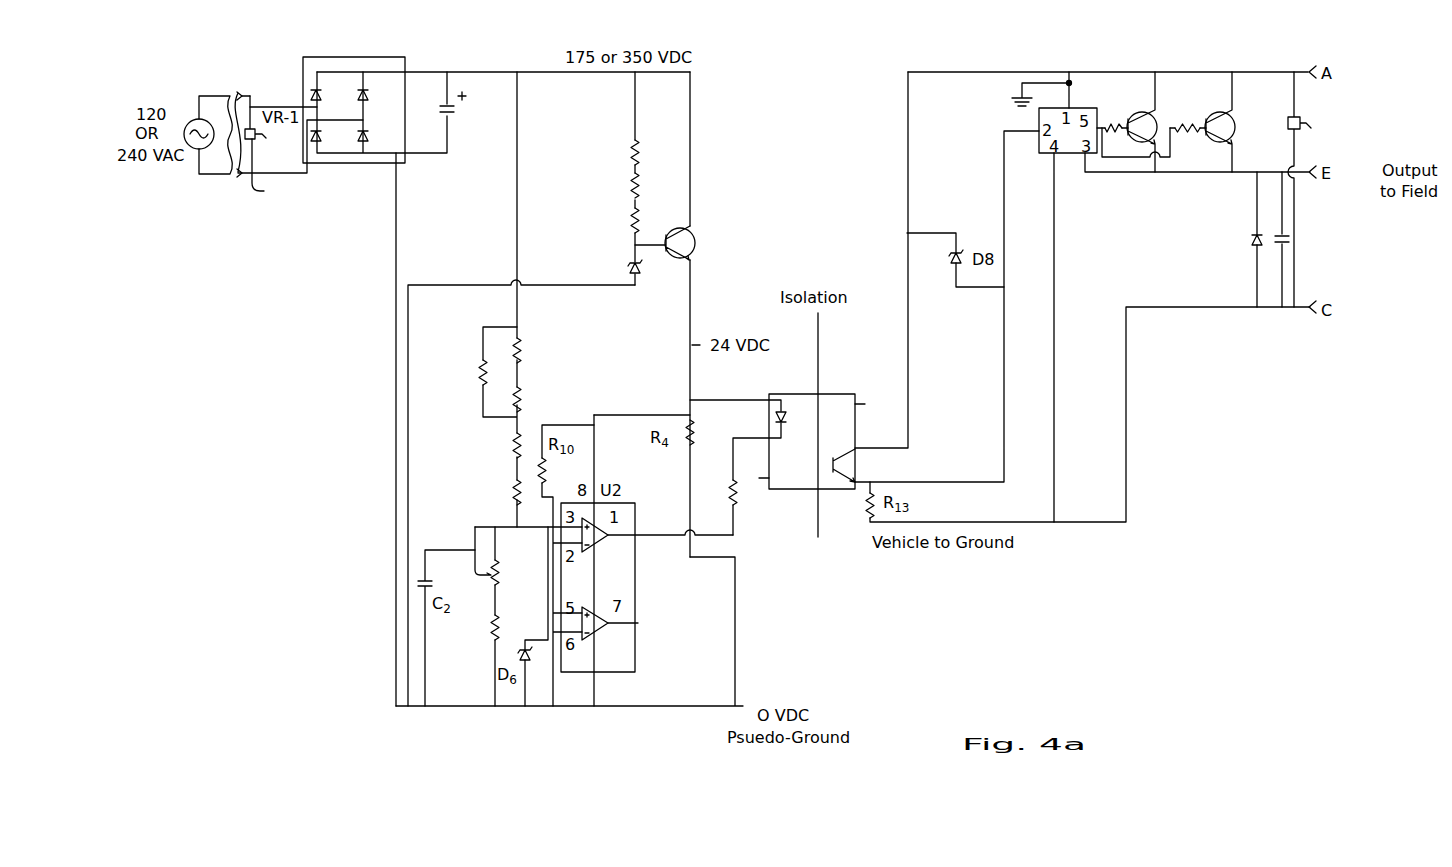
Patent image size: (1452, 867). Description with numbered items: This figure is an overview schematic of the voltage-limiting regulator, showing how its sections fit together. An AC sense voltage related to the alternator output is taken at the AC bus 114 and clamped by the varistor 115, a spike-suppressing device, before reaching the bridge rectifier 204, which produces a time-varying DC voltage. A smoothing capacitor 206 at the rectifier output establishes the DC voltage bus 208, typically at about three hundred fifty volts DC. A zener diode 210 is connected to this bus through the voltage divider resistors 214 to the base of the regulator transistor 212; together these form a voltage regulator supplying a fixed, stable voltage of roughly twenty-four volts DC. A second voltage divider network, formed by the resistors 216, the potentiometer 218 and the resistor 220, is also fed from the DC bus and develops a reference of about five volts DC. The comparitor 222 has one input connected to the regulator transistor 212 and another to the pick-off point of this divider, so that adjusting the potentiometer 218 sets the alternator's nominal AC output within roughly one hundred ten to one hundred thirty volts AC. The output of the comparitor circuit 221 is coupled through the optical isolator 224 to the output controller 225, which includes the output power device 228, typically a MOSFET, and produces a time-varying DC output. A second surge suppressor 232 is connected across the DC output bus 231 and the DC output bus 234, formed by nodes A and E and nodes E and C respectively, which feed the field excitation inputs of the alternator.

The AC bus 114 is at (215, 118).
The varistor VR-1 115 is at (272, 171).
The bridge rectifier 204 is at (343, 57).
The smoothing capacitor C1 206 is at (450, 117).
The DC voltage bus 208 is at (468, 72).
The zener diode 210 is at (627, 268).
The regulator transistor 212 is at (693, 233).
The voltage divider resistors 214 is at (608, 147).
The resistors 216 is at (473, 327).
The potentiometer 218 is at (499, 578).
The resistor 220 is at (499, 623).
The voltage comparitor circuit 221 is at (597, 628).
The comparitor 222 is at (597, 540).
The isolator 224 is at (841, 381).
The output controller 225 is at (1158, 118).
The output power device 228 is at (1238, 118).
The DC output bus 231 is at (1342, 75).
The second surge suppressor 232 is at (1298, 133).
The DC output bus 234 is at (1344, 178).